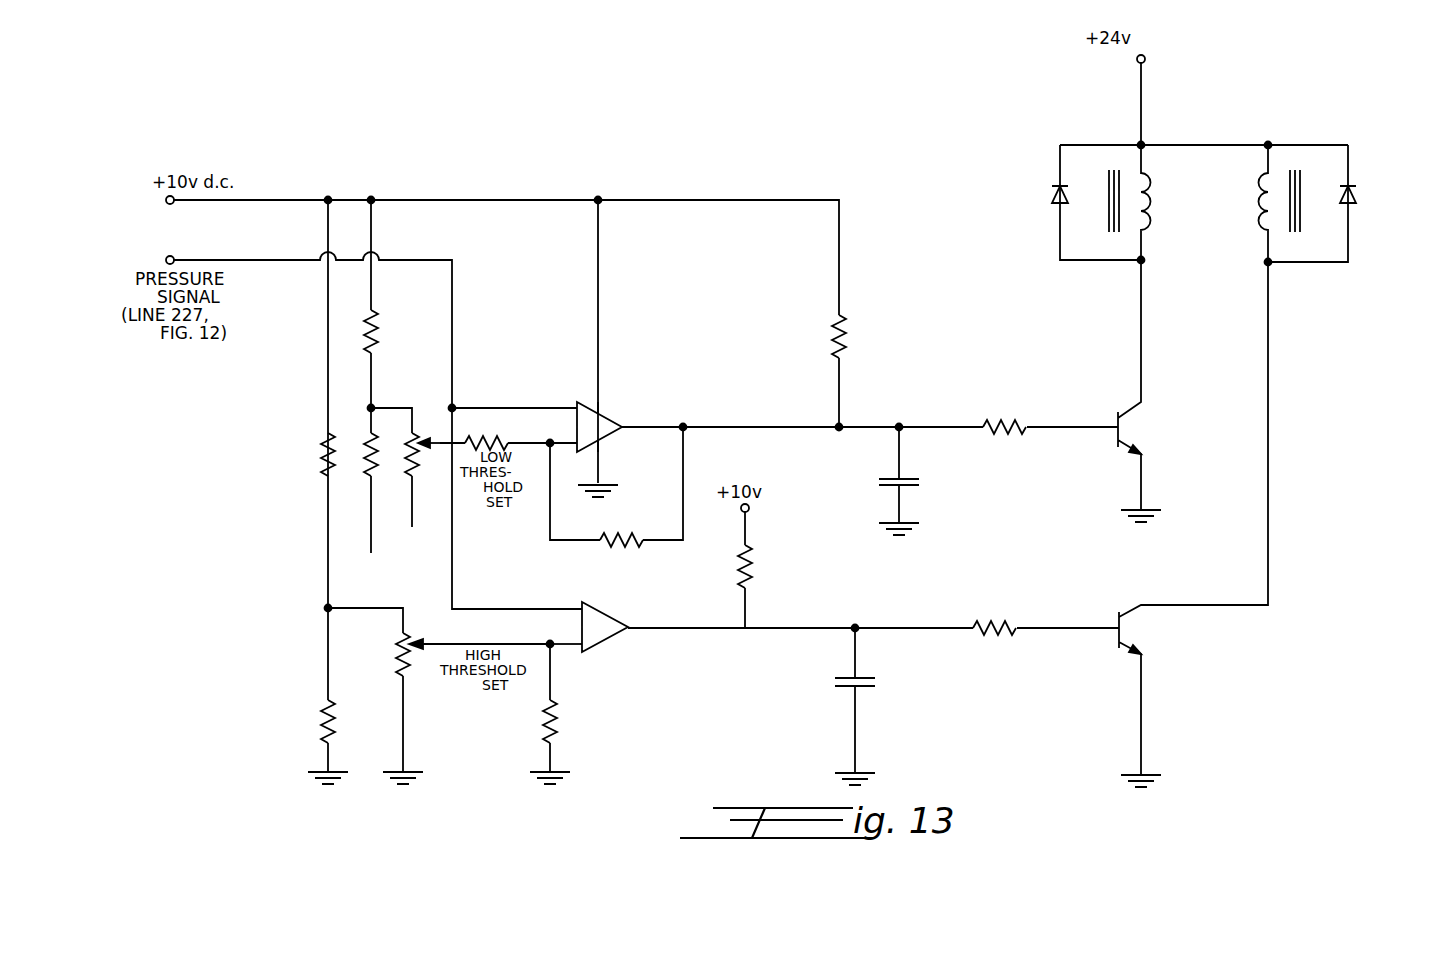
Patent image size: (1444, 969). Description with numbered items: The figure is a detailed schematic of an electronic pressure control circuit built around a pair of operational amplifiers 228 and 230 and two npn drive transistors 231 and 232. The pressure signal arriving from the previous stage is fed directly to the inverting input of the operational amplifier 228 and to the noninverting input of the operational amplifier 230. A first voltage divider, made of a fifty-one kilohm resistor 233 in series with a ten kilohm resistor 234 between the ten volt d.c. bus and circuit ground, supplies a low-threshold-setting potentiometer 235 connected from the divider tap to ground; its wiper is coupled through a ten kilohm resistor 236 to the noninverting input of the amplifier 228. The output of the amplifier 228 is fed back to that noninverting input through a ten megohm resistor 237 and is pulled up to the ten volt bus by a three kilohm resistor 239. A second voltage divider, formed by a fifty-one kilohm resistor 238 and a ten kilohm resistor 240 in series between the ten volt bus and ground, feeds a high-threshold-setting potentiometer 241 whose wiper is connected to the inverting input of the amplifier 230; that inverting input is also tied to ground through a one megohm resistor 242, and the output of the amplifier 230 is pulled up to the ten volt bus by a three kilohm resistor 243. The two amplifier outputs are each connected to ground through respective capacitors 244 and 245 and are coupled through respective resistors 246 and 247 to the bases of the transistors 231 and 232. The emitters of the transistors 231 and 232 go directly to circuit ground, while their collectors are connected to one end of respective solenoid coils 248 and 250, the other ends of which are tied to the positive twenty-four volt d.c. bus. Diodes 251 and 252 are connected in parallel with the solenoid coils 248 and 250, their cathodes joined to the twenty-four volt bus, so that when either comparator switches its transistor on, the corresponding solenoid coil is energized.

The operational amplifier 228 is at (609, 414).
The operational amplifier 230 is at (617, 609).
The npn drive transistor 231 is at (1142, 430).
The npn drive transistor 232 is at (1140, 633).
The resistor 233 is at (381, 332).
The resistor 234 is at (374, 466).
The low-threshold-setting potentiometer 235 is at (429, 465).
The resistor 236 is at (515, 443).
The resistor 237 is at (600, 540).
The resistor 238 is at (322, 455).
The resistor 239 is at (848, 345).
The resistor 240 is at (332, 714).
The high-threshold-setting potentiometer 241 is at (414, 657).
The resistor 242 is at (562, 722).
The resistor 243 is at (757, 563).
The capacitor 244 is at (923, 482).
The capacitor 245 is at (874, 688).
The resistor 246 is at (989, 422).
The resistor 247 is at (989, 620).
The solenoid coil 248 is at (1150, 201).
The solenoid coil 250 is at (1262, 205).
The diode 251 is at (1054, 193).
The diode 252 is at (1355, 193).